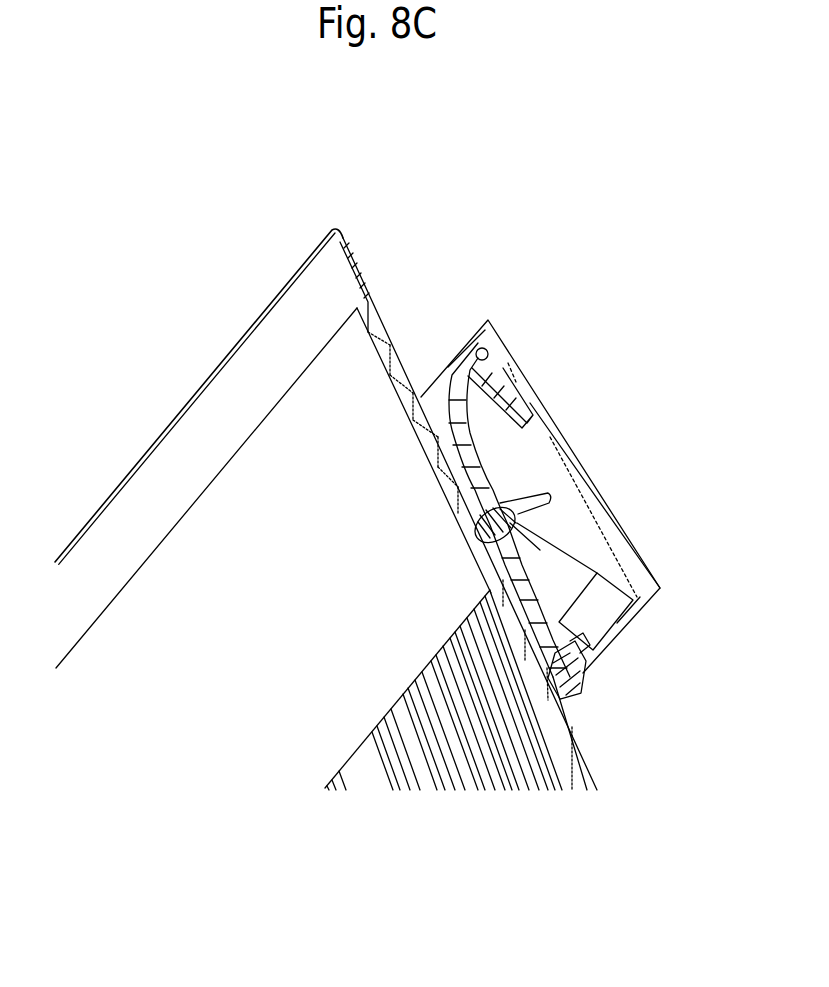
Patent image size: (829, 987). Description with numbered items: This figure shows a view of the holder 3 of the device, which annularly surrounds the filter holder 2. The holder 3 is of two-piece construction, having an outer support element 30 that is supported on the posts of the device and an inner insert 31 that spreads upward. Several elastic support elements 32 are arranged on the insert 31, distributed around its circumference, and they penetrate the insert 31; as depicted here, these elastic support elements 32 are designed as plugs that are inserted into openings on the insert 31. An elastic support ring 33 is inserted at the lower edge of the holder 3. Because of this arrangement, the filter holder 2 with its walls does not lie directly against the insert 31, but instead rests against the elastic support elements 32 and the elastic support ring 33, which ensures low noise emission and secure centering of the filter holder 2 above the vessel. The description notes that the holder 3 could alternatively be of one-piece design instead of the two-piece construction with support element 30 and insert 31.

The filter holder 2 is at (342, 243).
The holder 3 is at (575, 490).
The outer support element 30 is at (565, 463).
The insert 31 is at (450, 358).
The elastic support element 32 is at (520, 523).
The elastic support ring 33 is at (577, 683).